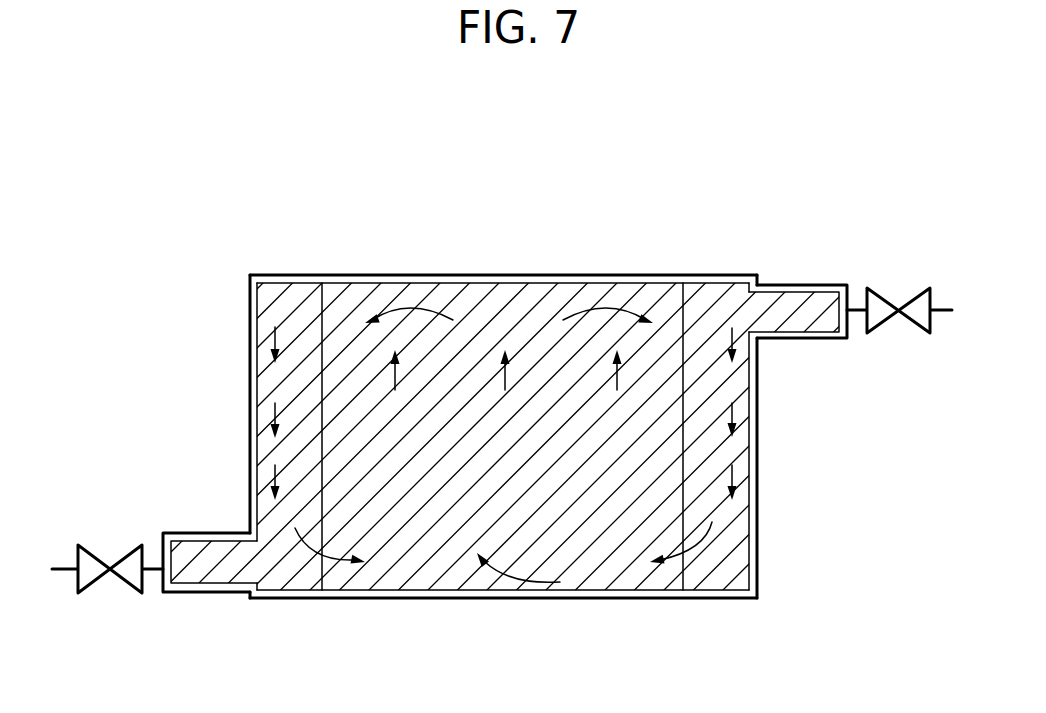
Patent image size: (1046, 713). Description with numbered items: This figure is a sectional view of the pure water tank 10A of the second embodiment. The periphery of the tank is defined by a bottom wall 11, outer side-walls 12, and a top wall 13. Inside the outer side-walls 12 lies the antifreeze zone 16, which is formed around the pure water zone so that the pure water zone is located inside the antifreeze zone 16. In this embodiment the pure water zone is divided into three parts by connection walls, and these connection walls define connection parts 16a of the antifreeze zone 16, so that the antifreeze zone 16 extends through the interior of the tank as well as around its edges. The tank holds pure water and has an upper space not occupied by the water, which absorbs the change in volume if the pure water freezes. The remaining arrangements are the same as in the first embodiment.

The pure water tank 10A is at (250, 196).
The bottom wall 11 is at (473, 598).
The outer side-wall 12 is at (250, 388).
The top wall 13 is at (455, 283).
The antifreeze zone 16 is at (289, 298).
The connection part 16a is at (603, 290).